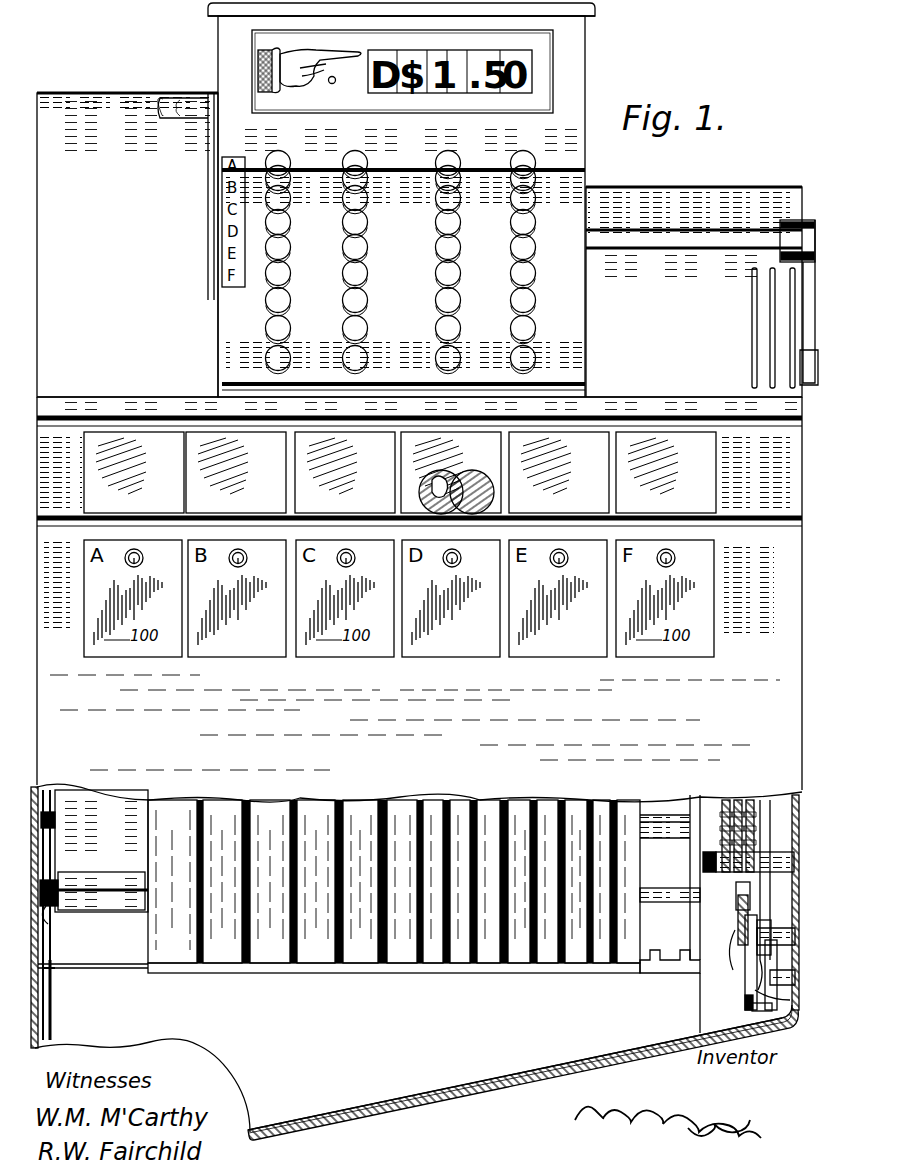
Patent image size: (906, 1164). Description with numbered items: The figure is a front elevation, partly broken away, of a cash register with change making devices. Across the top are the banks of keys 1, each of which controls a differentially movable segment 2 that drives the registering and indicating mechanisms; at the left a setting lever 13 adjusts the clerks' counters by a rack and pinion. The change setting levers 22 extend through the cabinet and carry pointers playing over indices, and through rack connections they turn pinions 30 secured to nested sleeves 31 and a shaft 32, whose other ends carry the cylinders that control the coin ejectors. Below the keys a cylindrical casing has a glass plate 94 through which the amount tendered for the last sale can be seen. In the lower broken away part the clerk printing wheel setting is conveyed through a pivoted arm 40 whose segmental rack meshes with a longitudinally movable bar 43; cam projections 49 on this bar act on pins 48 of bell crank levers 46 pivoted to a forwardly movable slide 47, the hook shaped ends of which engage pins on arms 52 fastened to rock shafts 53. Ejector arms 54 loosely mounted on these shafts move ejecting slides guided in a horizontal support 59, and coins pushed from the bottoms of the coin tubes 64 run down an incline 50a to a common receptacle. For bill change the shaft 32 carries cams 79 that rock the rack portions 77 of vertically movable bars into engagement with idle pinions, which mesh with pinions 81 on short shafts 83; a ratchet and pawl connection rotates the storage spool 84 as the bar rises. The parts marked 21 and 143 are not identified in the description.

The keys 1 is at (343, 252).
The differentially movable segment 2 is at (325, 165).
The setting lever 13 is at (213, 212).
The rod 21 is at (54, 800).
The change setting levers 22 is at (790, 380).
The pinions 30 is at (750, 800).
The nested sleeves 31 is at (735, 868).
The shaft 32 is at (46, 790).
The pivoted arm 40 is at (771, 804).
The longitudinally movable bar 43 is at (768, 962).
The bell crank levers 46 is at (750, 994).
The forwardly movable slide 47 is at (745, 916).
The pins 48 is at (763, 1012).
The cam projections 49 is at (790, 1012).
The incline 50a is at (462, 1082).
The arms 52 is at (740, 906).
The rock shafts 53 is at (658, 896).
The ejector arms 54 is at (738, 935).
The horizontal support 59 is at (128, 965).
The coin tubes 64 is at (265, 816).
The rack portions 77 is at (52, 1000).
The cams 79 is at (56, 818).
The pinions 81 is at (60, 888).
The short shafts 83 is at (52, 920).
The storage spool 84 is at (128, 900).
The glass plate 94 is at (600, 442).
The indicator frame 143 is at (808, 300).